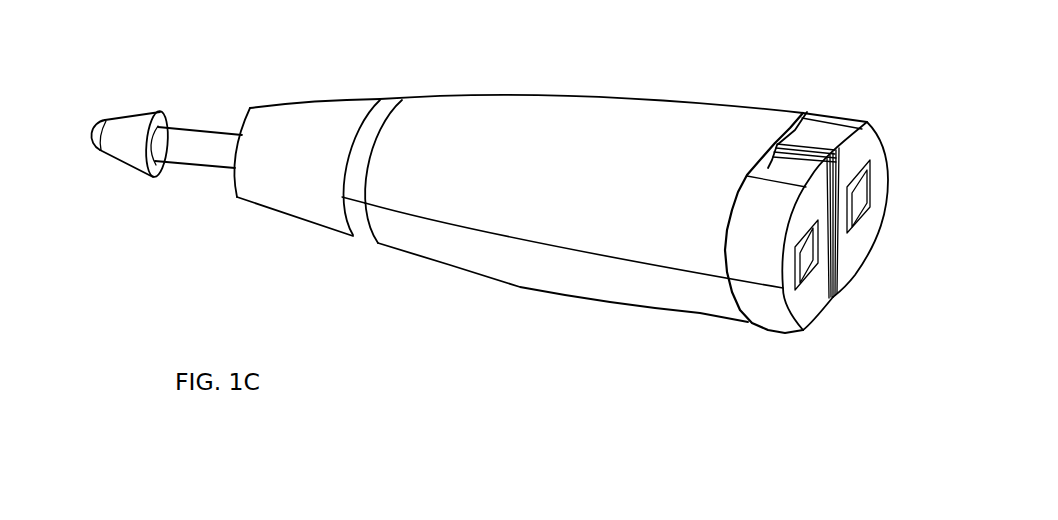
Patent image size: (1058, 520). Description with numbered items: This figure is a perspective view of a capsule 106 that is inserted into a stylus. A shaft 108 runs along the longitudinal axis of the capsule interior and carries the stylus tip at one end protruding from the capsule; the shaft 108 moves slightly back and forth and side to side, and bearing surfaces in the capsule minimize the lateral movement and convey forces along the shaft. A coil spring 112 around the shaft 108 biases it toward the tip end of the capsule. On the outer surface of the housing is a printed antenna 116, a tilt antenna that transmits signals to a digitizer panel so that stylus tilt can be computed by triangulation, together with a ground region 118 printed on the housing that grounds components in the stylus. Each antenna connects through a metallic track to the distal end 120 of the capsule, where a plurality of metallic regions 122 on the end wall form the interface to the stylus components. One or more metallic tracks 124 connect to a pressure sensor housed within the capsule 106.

The capsule 106 is at (504, 203).
The shaft 108 is at (130, 141).
The coil spring 112 is at (853, 217).
The printed antenna 116 is at (288, 184).
The ground region 118 is at (503, 252).
The distal end 120 is at (758, 303).
The metallic regions 122 is at (815, 252).
The metallic tracks 124 is at (830, 297).